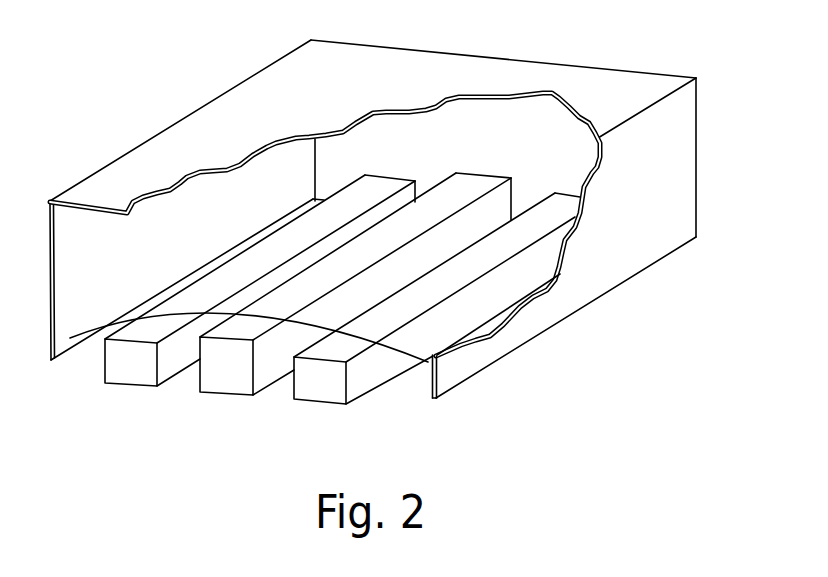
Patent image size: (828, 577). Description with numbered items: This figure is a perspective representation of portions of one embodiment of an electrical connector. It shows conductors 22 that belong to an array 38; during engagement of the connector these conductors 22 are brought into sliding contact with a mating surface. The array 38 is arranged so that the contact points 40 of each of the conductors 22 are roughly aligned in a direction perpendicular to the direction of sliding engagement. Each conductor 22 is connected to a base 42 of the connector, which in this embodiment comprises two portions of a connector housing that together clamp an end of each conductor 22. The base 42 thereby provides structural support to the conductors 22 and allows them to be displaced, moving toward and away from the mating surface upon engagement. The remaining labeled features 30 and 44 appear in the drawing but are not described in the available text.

The conductors 22 is at (115, 359).
The front wall portion 30 is at (424, 363).
The array 38 is at (228, 413).
The contact points 40 is at (143, 387).
The base 42 is at (489, 157).
The enclosure 44 is at (654, 248).